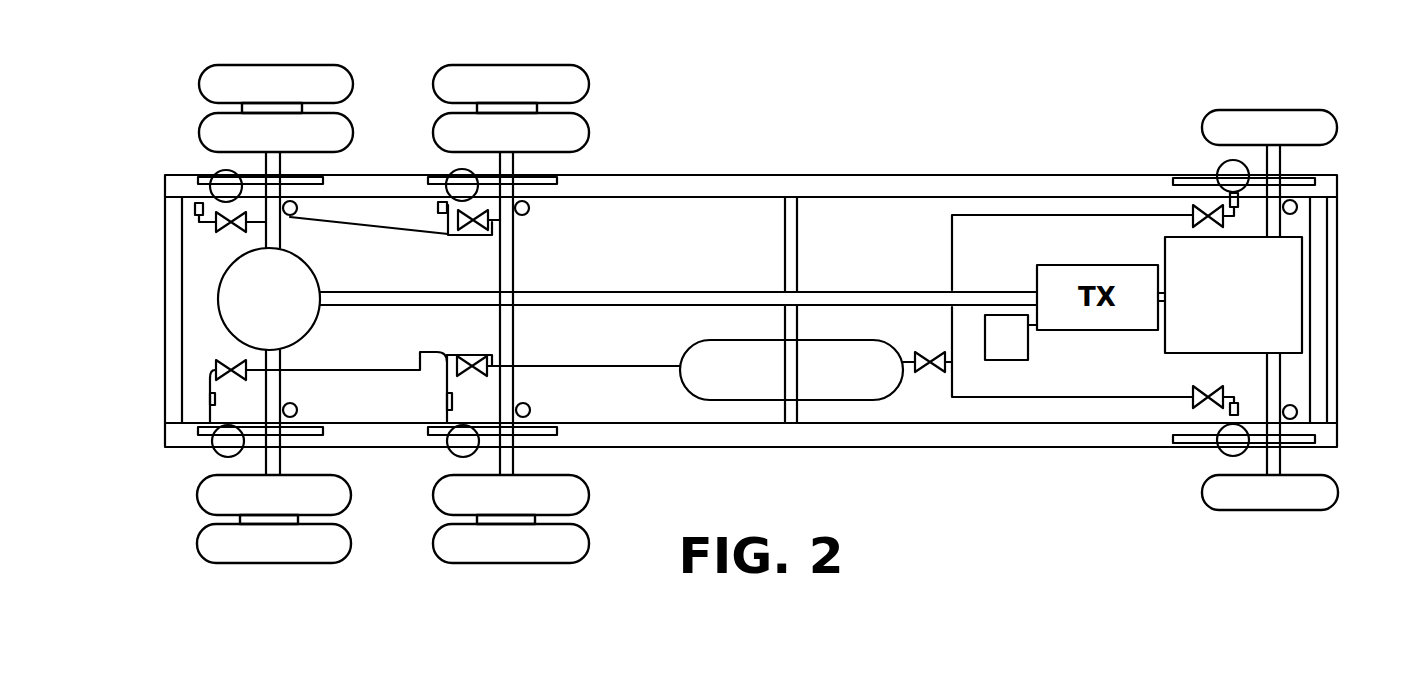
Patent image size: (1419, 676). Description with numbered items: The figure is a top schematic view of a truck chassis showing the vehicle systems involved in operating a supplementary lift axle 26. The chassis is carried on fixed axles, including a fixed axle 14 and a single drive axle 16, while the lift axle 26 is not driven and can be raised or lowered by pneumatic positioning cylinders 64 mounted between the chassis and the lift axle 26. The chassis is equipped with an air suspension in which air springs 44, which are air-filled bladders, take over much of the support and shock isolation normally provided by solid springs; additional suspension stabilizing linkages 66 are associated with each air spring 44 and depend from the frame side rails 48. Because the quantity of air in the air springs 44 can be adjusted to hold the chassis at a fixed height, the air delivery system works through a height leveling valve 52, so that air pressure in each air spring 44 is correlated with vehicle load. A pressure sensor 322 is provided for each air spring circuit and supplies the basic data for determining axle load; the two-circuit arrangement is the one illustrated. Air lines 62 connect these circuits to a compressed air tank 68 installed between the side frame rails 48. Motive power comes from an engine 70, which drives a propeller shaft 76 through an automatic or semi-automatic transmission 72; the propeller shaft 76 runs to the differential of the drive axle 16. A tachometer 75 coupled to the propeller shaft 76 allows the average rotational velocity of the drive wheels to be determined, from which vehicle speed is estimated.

The fixed axle 14 is at (1280, 383).
The drive axle 16 is at (260, 392).
The lift axle 26 is at (513, 255).
The air spring 44 is at (215, 195).
The frame side rail 48 is at (972, 182).
The height leveling valve 52 is at (438, 360).
The air line 62 is at (628, 368).
The pneumatic positioning cylinder 64 is at (529, 210).
The suspension stabilizing linkage 66 is at (327, 176).
The compressed air tank 68 is at (867, 385).
The engine 70 is at (1233, 295).
The transmission 72 is at (1048, 268).
The tachometer 75 is at (1028, 345).
The propeller shaft 76 is at (835, 288).
The pressure sensor 322 is at (447, 400).